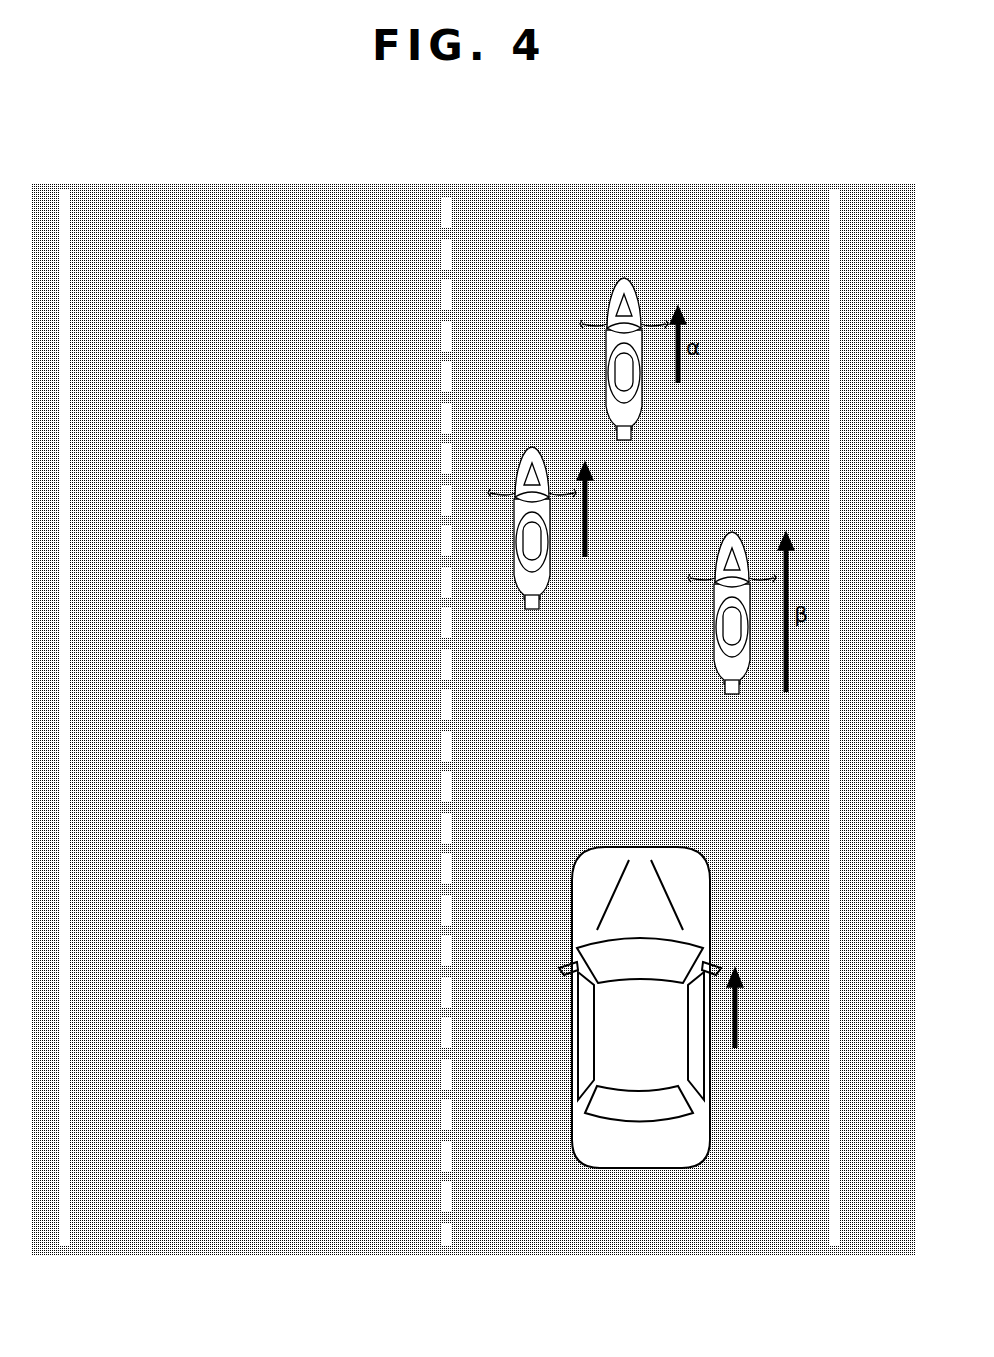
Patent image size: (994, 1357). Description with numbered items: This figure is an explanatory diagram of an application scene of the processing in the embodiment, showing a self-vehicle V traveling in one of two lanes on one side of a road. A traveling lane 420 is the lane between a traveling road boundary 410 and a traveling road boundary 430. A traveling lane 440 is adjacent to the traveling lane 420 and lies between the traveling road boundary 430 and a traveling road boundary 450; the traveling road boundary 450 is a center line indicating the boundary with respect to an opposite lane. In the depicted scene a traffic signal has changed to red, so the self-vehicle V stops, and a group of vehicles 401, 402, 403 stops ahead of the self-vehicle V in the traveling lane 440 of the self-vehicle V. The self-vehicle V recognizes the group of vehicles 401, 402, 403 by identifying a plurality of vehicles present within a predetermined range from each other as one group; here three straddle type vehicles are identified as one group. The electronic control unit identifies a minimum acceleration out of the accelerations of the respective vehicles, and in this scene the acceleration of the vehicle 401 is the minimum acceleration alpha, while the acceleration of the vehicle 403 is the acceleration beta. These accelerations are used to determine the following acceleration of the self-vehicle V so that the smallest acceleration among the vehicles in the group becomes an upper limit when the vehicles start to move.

The traveling road boundary 410 is at (64, 190).
The traveling lane 420 is at (240, 190).
The traveling road boundary 430 is at (446, 195).
The traveling lane 440 is at (651, 190).
The traveling road boundary 450 is at (836, 190).
The vehicle 401 is at (624, 280).
The vehicle 402 is at (532, 449).
The vehicle 403 is at (732, 534).
The self-vehicle V is at (632, 1172).